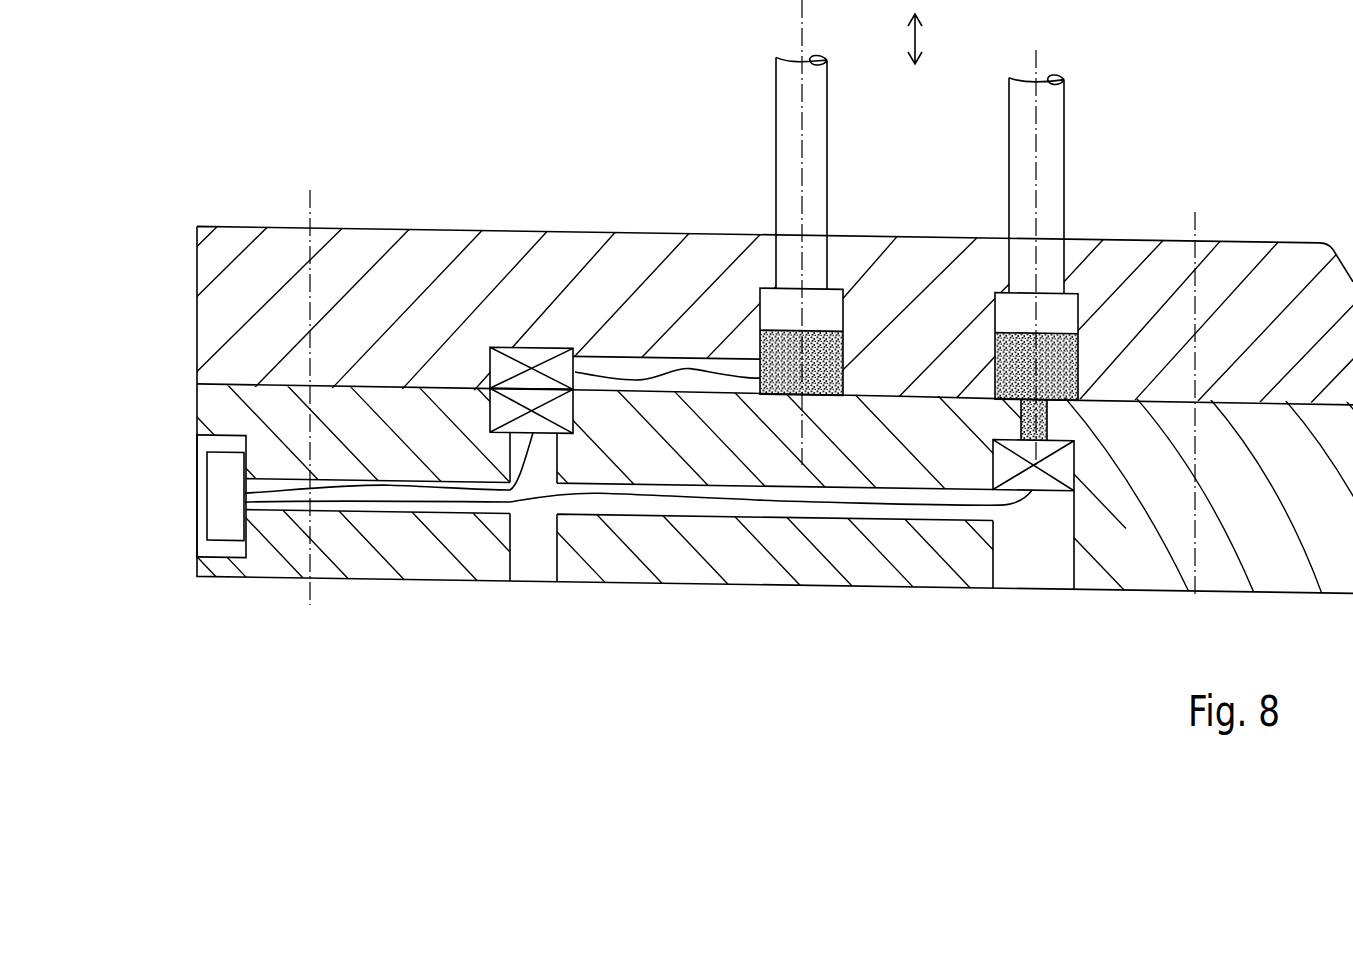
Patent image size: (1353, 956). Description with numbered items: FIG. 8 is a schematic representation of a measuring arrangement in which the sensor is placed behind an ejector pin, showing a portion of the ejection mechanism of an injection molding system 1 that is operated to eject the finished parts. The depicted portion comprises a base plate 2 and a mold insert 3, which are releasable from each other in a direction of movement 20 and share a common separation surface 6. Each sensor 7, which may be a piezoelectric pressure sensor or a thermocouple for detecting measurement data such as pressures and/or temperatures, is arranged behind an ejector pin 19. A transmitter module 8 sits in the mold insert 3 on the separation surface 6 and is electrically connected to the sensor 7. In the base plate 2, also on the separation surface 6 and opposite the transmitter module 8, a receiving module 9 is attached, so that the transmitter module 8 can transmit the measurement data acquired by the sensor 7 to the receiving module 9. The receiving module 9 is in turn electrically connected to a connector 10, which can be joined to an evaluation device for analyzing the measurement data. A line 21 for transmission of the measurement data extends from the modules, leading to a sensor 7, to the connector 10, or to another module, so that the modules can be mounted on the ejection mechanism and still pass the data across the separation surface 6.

The injection molding system 1 is at (137, 367).
The base plate 2 is at (218, 408).
The mold insert 3 is at (210, 260).
The separation surface 6 is at (388, 376).
The sensor 7 is at (842, 352).
The transmitter module 8 is at (558, 368).
The receiving module 9 is at (565, 405).
The connector 10 is at (227, 516).
The ejector pin 19 is at (787, 207).
The direction of movement 20 is at (940, 39).
The line 21 is at (667, 372).